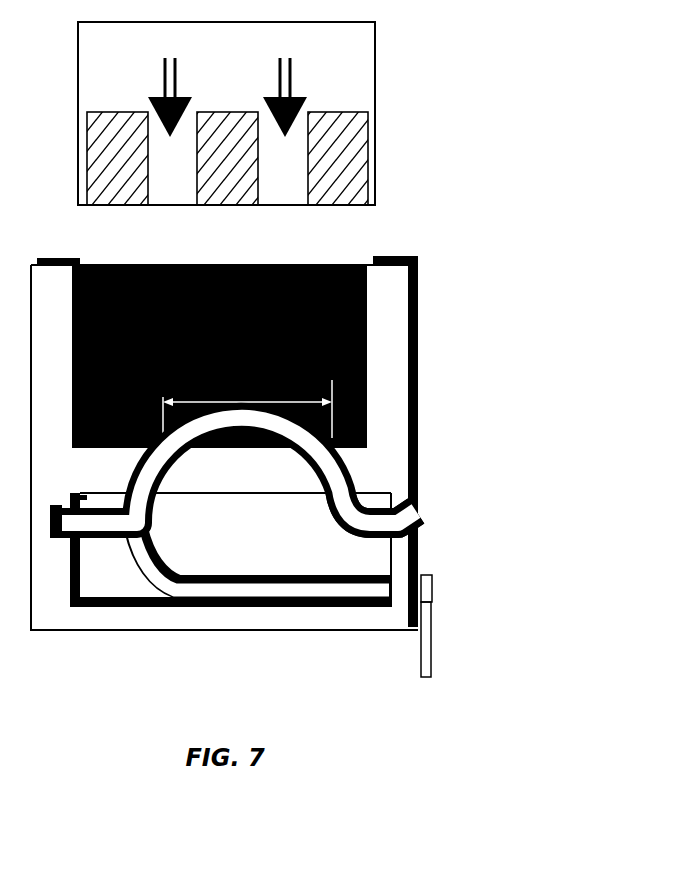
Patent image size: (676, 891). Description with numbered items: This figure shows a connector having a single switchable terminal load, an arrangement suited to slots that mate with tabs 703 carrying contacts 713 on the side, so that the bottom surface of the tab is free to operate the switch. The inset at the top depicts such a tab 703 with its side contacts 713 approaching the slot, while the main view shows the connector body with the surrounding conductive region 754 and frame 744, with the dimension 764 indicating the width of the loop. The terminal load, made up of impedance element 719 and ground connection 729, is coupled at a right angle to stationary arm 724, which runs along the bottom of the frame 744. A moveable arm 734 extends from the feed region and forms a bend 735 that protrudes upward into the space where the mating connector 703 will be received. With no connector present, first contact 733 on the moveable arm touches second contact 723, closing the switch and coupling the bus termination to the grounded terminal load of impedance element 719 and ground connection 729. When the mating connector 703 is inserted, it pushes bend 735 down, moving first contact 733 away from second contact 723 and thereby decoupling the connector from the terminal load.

The mating connector tab 703 is at (214, 73).
The contact 713 is at (104, 168).
The ground plane 754 is at (214, 343).
The loop width 764 is at (232, 394).
The first contact 733 is at (71, 497).
The second contact 723 is at (103, 497).
The bend 735 is at (268, 440).
The stationary arm 724 is at (207, 576).
The moveable arm 734 is at (330, 525).
The conductive frame 744 is at (84, 578).
The impedance element 719 is at (432, 586).
The ground connection 729 is at (431, 677).